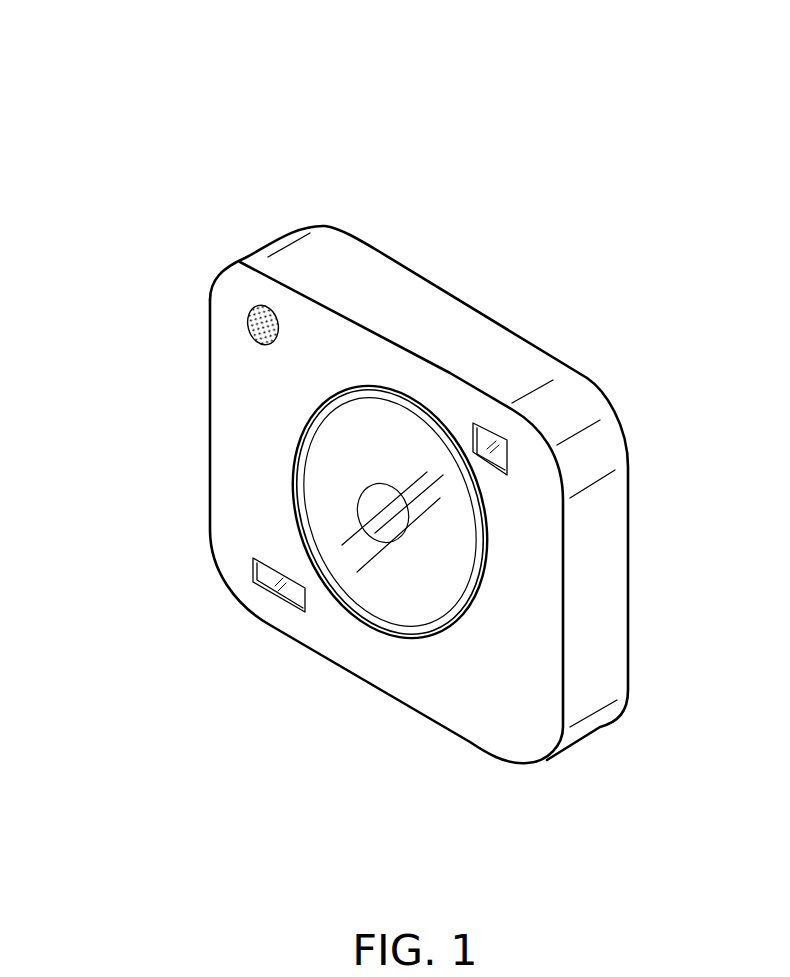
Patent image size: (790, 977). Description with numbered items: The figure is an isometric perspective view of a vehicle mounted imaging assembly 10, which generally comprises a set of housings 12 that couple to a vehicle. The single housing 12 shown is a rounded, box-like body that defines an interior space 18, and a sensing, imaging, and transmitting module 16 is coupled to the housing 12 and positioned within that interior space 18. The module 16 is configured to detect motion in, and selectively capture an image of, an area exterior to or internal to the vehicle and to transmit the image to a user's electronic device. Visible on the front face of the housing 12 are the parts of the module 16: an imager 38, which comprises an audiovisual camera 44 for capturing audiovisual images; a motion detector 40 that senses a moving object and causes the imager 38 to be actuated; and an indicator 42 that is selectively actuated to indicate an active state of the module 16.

The vehicle mounted imaging assembly 10 is at (372, 108).
The housing 12 is at (452, 298).
The sensing, imaging, and transmitting module 16 is at (356, 308).
The interior space 18 is at (487, 362).
The imager 38 is at (342, 492).
The motion detector 40 is at (492, 448).
The indicator 42 is at (263, 572).
The audiovisual camera 44 is at (330, 432).